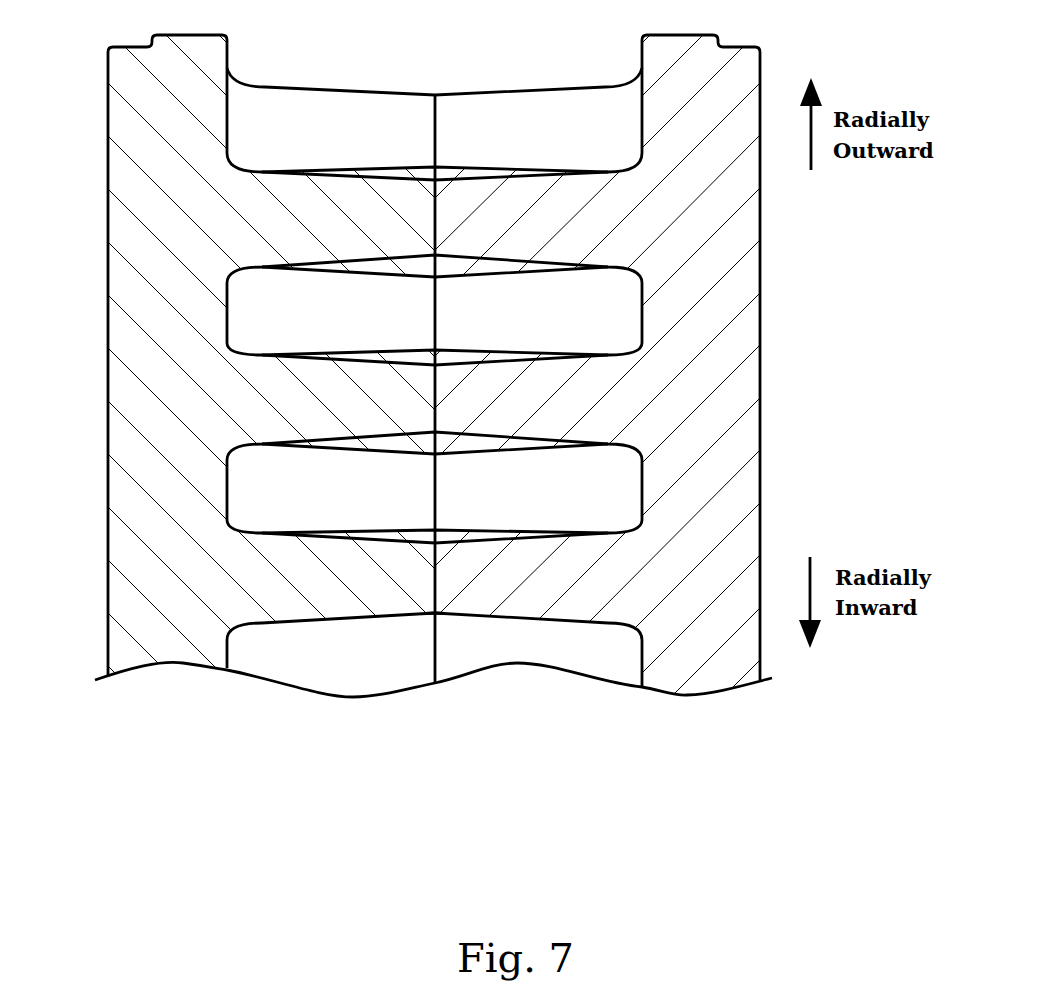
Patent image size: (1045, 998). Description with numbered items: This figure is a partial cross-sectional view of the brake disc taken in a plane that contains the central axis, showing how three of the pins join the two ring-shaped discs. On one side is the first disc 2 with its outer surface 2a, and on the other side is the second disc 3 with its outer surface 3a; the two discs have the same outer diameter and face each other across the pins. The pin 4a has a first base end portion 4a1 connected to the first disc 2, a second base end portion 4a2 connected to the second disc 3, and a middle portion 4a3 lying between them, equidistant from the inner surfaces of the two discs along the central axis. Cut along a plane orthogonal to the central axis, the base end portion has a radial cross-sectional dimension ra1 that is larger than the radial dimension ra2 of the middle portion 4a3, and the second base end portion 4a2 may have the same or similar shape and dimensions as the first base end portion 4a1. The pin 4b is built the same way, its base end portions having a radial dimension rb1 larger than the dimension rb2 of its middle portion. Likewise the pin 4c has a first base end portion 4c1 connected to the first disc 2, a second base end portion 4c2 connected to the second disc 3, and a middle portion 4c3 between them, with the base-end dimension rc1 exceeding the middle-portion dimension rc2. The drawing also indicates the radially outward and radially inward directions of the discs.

The first disc 2 is at (740, 318).
The outer surface of first disc 2a is at (762, 490).
The second disc 3 is at (127, 318).
The outer surface of second disc 3a is at (108, 490).
The pin 4a is at (492, 620).
The first base end portion 4a1 is at (628, 618).
The second base end portion 4a2 is at (245, 622).
The middle portion 4a3 is at (442, 620).
The pin 4b is at (480, 362).
The pin 4c is at (485, 178).
The first base end portion 4c1 is at (628, 178).
The second base end portion 4c2 is at (242, 178).
The middle portion 4c3 is at (451, 178).
The cross-sectional dimension rc1 is at (227, 283).
The cross-sectional dimension rc2 is at (435, 253).
The cross-sectional dimension rb1 is at (227, 458).
The cross-sectional dimension rb2 is at (435, 432).
The cross-sectional dimension ra1 is at (227, 637).
The cross-sectional dimension ra2 is at (440, 613).